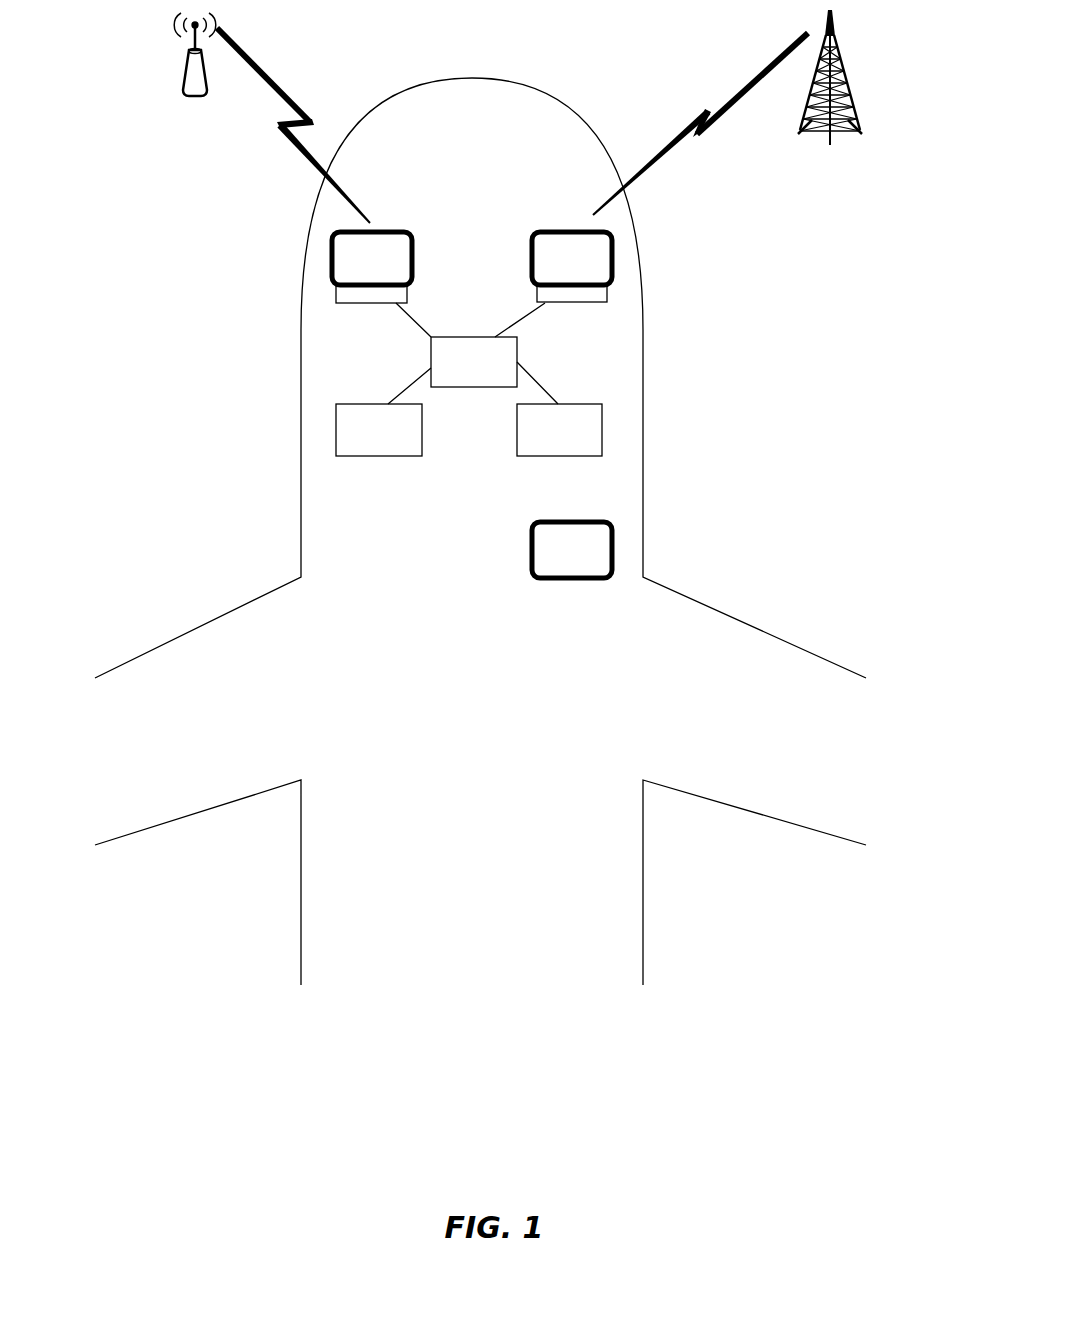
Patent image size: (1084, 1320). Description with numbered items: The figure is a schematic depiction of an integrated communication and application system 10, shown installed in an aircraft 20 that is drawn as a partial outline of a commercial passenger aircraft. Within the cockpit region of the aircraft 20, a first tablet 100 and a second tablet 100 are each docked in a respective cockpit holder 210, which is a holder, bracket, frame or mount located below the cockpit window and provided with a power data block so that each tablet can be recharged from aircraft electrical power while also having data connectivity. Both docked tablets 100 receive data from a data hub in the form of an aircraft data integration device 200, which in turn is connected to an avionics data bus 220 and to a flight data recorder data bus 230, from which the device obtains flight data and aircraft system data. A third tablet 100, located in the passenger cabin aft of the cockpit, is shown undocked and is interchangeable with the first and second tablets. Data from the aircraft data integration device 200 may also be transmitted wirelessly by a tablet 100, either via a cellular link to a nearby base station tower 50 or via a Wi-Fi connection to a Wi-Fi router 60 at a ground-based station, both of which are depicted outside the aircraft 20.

The integrated communication and application system 10 is at (302, 321).
The aircraft 20 is at (517, 87).
The base station tower 50 is at (857, 97).
The Wi-Fi router 60 is at (183, 88).
The tablet 100 is at (332, 258).
The cockpit holder 210 is at (336, 293).
The aircraft data integration device 200 is at (517, 362).
The ARINC 429 data bus 220 is at (336, 420).
The ARINC 717 data bus 230 is at (602, 437).